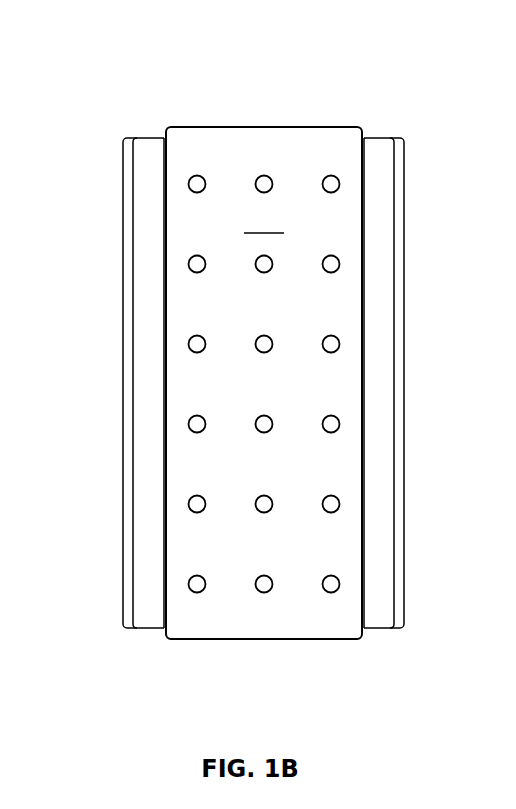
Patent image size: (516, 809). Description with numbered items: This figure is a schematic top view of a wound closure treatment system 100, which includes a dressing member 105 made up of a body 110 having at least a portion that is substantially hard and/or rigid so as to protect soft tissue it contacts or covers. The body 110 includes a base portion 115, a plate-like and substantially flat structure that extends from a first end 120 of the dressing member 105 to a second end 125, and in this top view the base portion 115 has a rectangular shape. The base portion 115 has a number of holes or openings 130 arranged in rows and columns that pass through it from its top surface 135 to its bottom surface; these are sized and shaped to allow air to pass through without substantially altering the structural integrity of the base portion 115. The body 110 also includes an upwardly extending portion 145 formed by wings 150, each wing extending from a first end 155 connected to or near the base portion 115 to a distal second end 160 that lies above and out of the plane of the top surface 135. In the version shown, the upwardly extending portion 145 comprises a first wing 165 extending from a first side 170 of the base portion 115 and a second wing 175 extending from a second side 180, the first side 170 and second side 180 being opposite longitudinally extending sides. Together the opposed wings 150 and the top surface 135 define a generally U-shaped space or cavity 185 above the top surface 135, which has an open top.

The wound closure treatment system 100 is at (350, 43).
The dressing member 105 is at (387, 78).
The body 110 is at (425, 113).
The base portion 115 is at (223, 146).
The first end 120 is at (105, 618).
The second end 125 is at (112, 148).
The holes or openings 130 is at (189, 344).
The top surface 135 is at (305, 152).
The upwardly extending portion 145 is at (133, 80).
The wings 150 is at (148, 274).
The first end of wing 155 is at (165, 215).
The second end of wing 160 is at (128, 443).
The first wing 165 is at (150, 625).
The second wing 175 is at (375, 625).
The first side 170 is at (185, 672).
The second side 180 is at (347, 672).
The space or cavity 185 is at (264, 219).